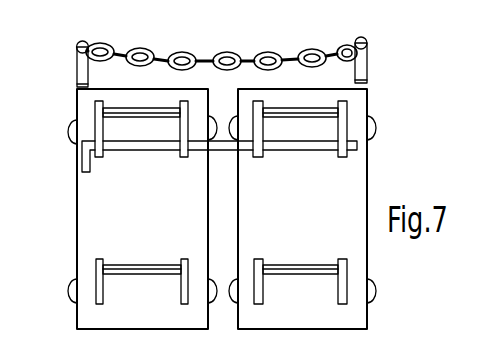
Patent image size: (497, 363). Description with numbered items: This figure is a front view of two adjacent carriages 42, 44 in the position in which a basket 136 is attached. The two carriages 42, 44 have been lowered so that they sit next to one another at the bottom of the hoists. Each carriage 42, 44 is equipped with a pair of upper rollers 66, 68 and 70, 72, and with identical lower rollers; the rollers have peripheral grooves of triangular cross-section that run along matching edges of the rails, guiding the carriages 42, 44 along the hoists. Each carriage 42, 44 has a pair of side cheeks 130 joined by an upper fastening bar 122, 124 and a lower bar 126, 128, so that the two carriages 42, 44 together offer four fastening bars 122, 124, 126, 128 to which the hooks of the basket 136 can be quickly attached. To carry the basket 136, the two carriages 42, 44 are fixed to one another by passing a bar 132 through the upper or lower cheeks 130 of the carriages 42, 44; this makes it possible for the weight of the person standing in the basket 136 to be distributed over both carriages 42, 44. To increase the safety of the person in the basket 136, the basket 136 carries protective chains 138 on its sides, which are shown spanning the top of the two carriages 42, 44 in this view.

The carriage 42 is at (152, 222).
The carriage 44 is at (311, 222).
The upper roller 66 is at (68, 131).
The upper roller 68 is at (219, 150).
The upper roller 70 is at (230, 128).
The upper roller 72 is at (384, 109).
The upper fastening bar 122 is at (132, 107).
The upper fastening bar 124 is at (308, 107).
The lower bar 126 is at (140, 274).
The lower bar 128 is at (299, 274).
The side cheeks 130 is at (186, 159).
The bar 132 is at (81, 170).
The basket 136 is at (77, 62).
The protective chains 138 is at (242, 22).